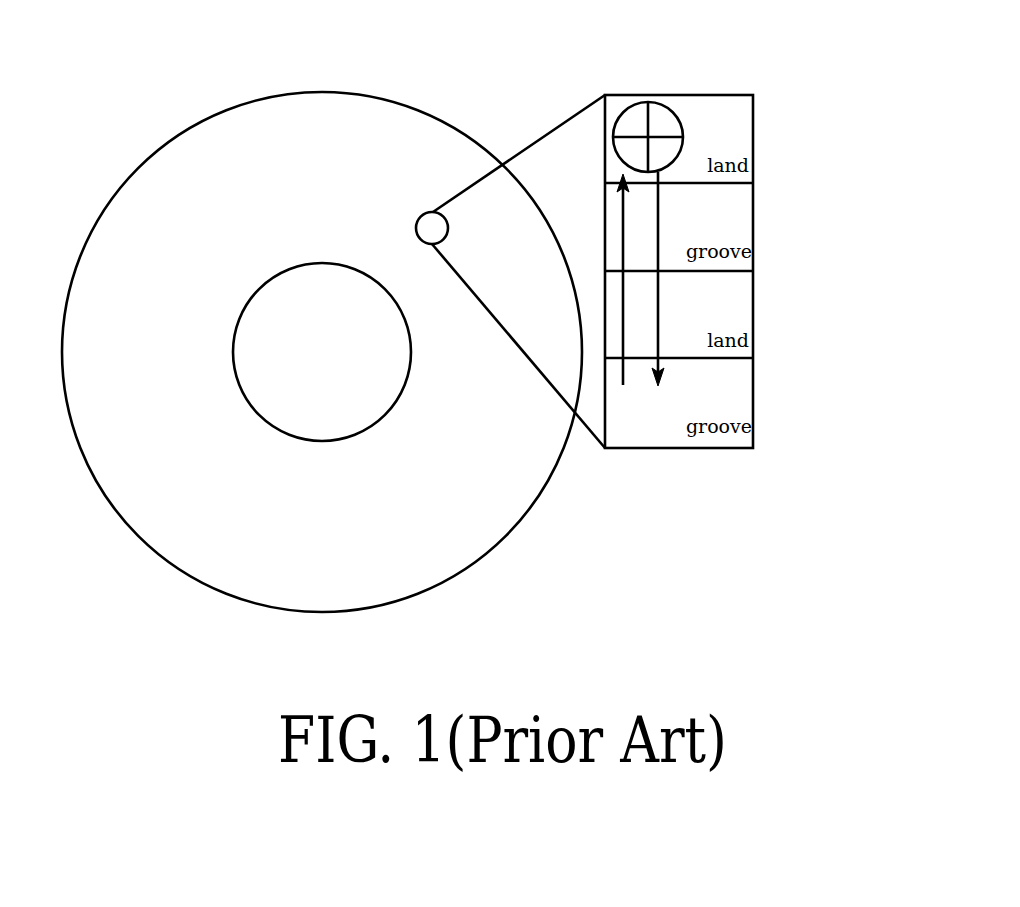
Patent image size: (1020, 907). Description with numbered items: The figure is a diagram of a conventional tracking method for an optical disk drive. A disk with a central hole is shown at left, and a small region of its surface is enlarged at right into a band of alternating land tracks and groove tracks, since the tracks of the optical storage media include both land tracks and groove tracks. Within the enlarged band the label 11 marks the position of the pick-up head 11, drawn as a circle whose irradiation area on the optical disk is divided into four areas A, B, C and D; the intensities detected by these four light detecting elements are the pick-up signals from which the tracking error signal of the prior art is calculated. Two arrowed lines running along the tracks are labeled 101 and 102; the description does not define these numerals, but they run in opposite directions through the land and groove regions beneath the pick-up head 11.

The pick-up head 11 is at (662, 103).
The land track 101 is at (625, 333).
The groove track 102 is at (662, 310).